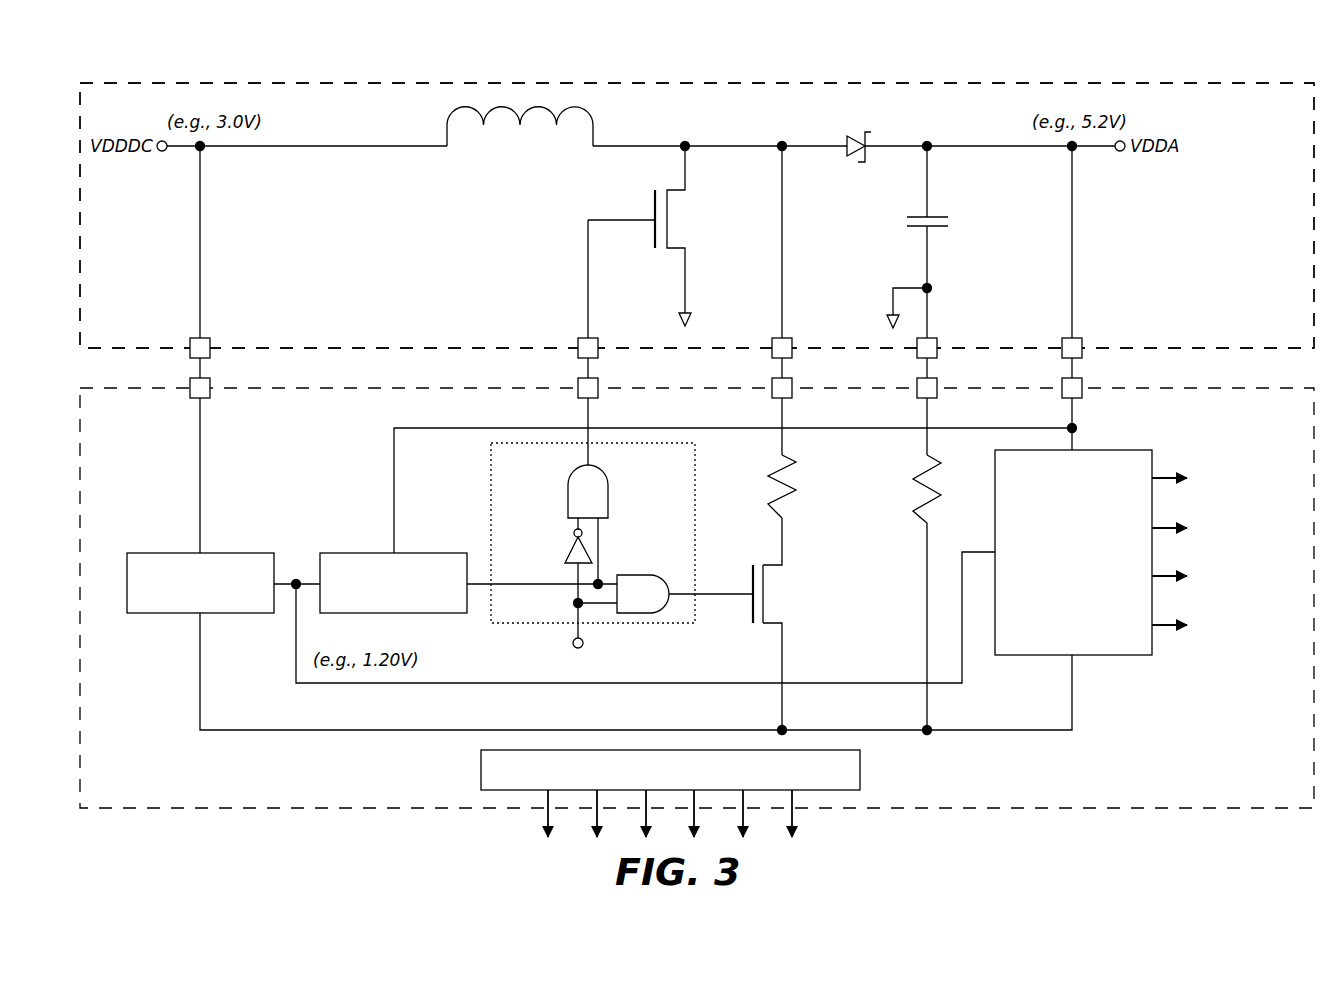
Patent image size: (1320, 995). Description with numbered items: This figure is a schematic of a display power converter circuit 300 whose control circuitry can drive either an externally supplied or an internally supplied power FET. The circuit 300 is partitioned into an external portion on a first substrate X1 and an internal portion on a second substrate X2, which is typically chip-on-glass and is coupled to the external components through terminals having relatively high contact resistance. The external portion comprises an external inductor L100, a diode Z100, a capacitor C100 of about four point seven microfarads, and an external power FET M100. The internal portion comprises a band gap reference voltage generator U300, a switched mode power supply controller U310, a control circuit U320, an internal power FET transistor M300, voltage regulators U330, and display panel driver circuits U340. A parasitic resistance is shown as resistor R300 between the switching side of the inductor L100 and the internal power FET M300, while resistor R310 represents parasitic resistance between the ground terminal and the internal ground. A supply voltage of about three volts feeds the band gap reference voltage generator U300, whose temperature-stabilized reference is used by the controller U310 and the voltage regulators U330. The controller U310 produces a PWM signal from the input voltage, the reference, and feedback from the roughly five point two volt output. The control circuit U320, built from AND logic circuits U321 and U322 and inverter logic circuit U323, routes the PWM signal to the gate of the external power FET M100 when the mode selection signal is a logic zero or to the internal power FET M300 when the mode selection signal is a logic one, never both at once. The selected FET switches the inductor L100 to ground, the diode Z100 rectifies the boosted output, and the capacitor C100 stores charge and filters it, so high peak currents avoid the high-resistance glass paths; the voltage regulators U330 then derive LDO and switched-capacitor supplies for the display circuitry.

The circuit 300 is at (1248, 61).
The first substrate X1 is at (152, 348).
The second substrate X2 is at (152, 388).
The external inductor L100 is at (520, 150).
The external power FET M100 is at (670, 224).
The diode Z100 is at (856, 140).
The capacitor C100 is at (911, 221).
The band gap reference voltage generator U300 is at (174, 553).
The switched mode power supply controller U310 is at (367, 553).
The control circuit U320 is at (540, 623).
The AND logic circuit U321 is at (600, 468).
The AND logic circuit U322 is at (624, 572).
The inverter logic circuit U323 is at (572, 550).
The internal power FET transistor M300 is at (773, 598).
The resistor R300 is at (767, 471).
The resistor R310 is at (912, 471).
The voltage regulators U330 is at (1092, 450).
The display panel driver circuits U340 is at (481, 772).